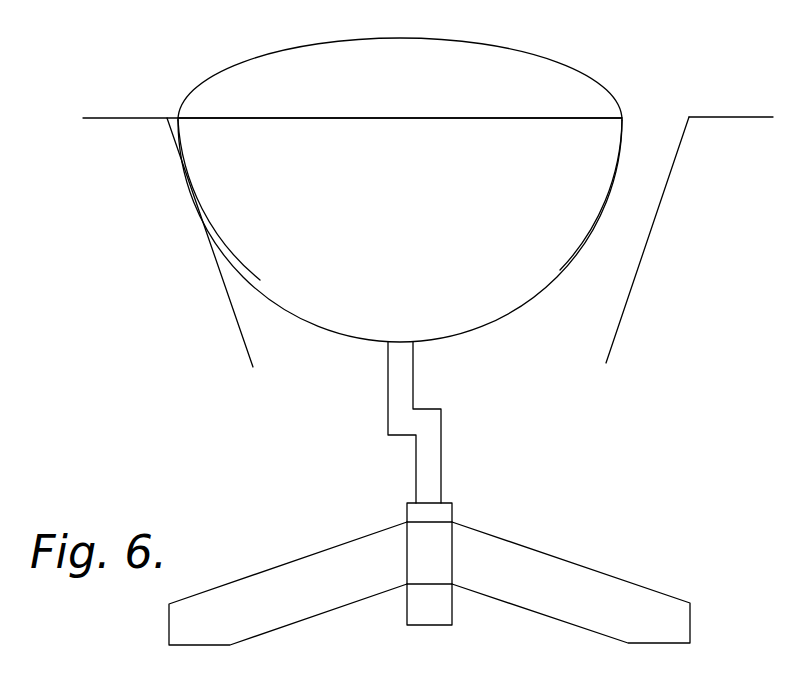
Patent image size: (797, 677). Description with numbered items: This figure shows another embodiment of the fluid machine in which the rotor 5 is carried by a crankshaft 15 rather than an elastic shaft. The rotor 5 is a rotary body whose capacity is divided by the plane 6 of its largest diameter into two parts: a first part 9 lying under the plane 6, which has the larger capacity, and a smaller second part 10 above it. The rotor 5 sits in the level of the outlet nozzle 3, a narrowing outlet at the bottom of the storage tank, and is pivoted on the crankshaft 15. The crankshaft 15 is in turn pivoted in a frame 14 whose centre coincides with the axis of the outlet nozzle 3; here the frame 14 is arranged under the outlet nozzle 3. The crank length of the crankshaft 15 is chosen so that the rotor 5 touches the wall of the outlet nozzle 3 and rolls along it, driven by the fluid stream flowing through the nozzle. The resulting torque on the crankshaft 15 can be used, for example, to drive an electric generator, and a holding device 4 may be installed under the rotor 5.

The outlet nozzle 3 is at (227, 298).
The holding device 4 is at (392, 458).
The rotor 5 is at (582, 285).
The plane of the largest diameter 6 is at (223, 118).
The first part of the rotor 9 is at (213, 189).
The second part of the rotor 10 is at (553, 80).
The frame 14 is at (582, 575).
The crankshaft 15 is at (425, 425).